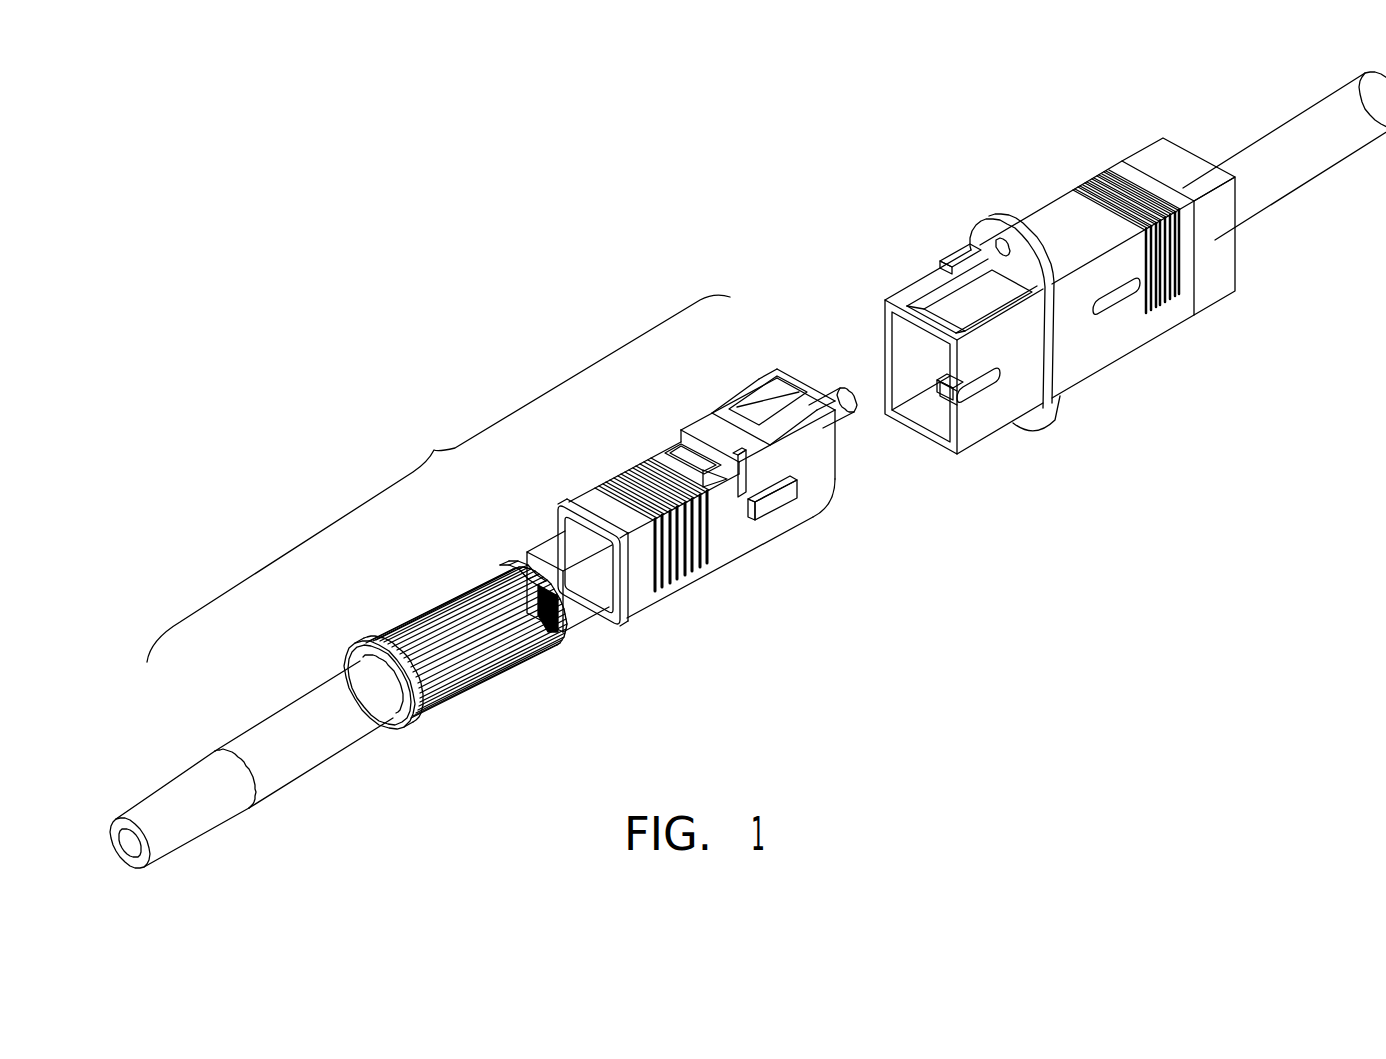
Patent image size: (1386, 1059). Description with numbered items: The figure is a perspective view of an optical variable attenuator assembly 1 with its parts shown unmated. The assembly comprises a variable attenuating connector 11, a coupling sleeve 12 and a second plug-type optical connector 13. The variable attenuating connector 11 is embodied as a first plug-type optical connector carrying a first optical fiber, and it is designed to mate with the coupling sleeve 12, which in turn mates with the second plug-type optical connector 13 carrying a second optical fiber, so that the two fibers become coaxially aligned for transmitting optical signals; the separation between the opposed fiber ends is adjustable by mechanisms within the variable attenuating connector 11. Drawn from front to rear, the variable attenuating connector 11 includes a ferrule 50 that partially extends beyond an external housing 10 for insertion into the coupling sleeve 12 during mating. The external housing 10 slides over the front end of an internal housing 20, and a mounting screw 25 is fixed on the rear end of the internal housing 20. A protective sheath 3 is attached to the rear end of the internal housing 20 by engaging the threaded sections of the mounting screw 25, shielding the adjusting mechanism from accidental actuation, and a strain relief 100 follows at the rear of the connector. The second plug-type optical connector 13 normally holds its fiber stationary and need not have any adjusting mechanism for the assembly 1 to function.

The optical variable attenuator assembly 1 is at (748, 455).
The protective sheath 3 is at (456, 612).
The external housing 10 is at (656, 457).
The variable attenuating connector 11 is at (502, 512).
The coupling sleeve 12 is at (998, 220).
The second plug-type optical connector 13 is at (1265, 116).
The internal housing 20 is at (572, 540).
The mounting screw 25 is at (517, 560).
The ferrule 50 is at (836, 398).
The strain relief 100 is at (318, 713).